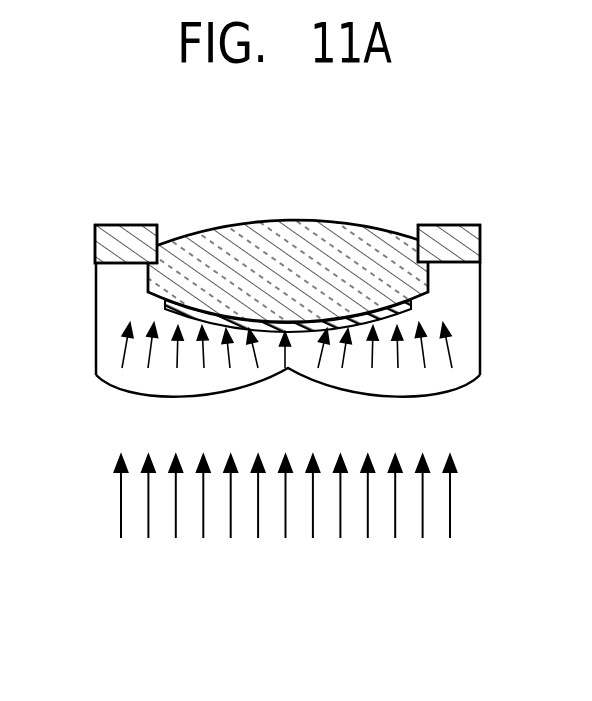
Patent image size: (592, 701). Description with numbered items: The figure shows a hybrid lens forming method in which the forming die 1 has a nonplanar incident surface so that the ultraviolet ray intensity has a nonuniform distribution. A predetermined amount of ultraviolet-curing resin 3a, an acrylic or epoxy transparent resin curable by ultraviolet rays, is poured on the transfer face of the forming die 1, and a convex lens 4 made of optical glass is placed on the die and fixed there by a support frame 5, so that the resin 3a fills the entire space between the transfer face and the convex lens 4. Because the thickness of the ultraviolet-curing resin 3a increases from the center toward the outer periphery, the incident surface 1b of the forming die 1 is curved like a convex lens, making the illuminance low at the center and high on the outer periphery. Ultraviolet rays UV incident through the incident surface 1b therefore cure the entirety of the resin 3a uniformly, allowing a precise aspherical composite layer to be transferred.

The forming die 1 is at (110, 348).
The incident surface 1b is at (130, 392).
The ultraviolet-curing resin 3a is at (150, 322).
The convex lens 4 is at (297, 243).
The support frame 5 is at (465, 242).
The ultraviolet rays UV is at (313, 520).